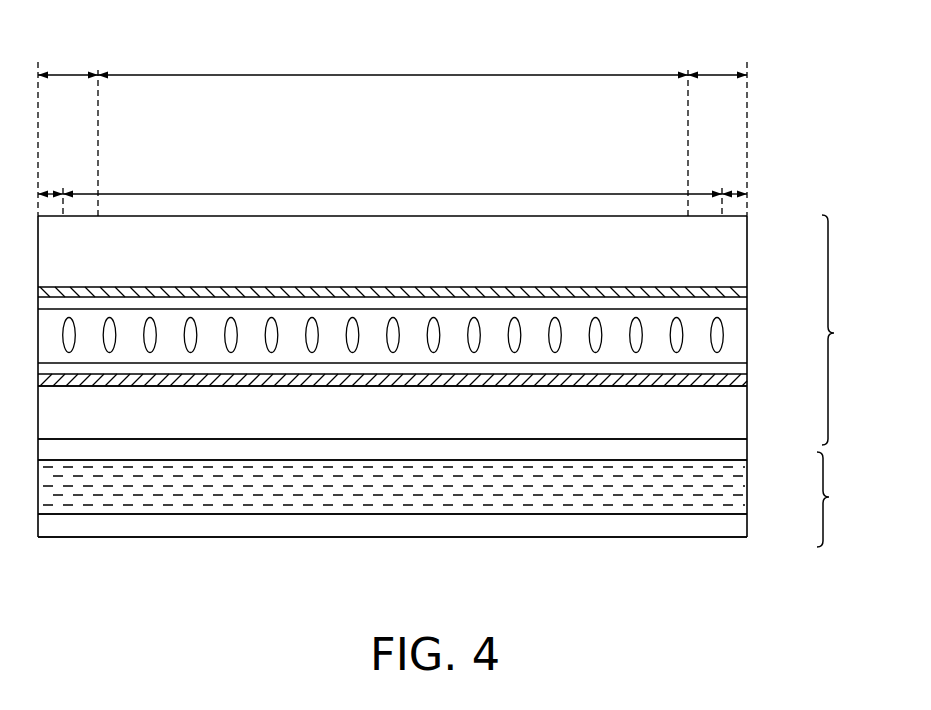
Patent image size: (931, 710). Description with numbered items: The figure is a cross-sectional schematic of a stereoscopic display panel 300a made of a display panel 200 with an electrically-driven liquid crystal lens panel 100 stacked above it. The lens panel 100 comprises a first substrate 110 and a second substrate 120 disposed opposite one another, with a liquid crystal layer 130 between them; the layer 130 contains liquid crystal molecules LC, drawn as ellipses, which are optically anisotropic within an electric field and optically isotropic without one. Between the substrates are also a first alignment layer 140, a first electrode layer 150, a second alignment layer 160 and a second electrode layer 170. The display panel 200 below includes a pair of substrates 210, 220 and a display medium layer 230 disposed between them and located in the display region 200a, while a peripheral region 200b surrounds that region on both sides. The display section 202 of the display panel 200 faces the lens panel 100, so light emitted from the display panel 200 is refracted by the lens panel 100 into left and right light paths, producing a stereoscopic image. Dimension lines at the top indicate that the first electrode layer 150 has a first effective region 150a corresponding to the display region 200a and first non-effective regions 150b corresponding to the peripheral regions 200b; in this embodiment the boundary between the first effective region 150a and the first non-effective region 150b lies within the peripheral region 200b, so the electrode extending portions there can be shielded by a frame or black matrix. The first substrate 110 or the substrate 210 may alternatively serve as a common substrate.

The electrically-driven liquid crystal lens panel 100 is at (848, 330).
The first substrate 110 is at (737, 420).
The second substrate 120 is at (737, 250).
The liquid crystal layer 130 is at (742, 348).
The first alignment layer 140 is at (747, 376).
The first electrode layer 150 is at (740, 387).
The second alignment layer 160 is at (747, 303).
The second electrode layer 170 is at (747, 290).
The liquid crystal molecules LC is at (723, 335).
The display panel 200 is at (843, 499).
The display section 202 is at (580, 438).
The substrate 210 is at (740, 452).
The substrate 220 is at (740, 527).
The display medium layer 230 is at (740, 490).
The stereoscopic display panel 300a is at (771, 608).
The first effective region 150a is at (383, 194).
The first non-effective region 150b is at (50, 192).
The display region 200a is at (393, 58).
The peripheral region 200b is at (392, 57).